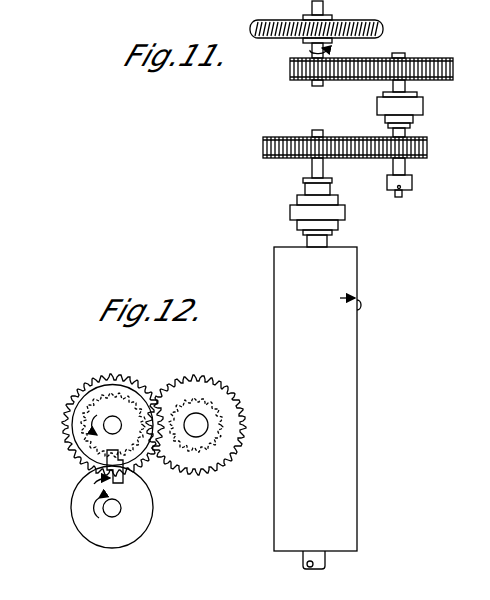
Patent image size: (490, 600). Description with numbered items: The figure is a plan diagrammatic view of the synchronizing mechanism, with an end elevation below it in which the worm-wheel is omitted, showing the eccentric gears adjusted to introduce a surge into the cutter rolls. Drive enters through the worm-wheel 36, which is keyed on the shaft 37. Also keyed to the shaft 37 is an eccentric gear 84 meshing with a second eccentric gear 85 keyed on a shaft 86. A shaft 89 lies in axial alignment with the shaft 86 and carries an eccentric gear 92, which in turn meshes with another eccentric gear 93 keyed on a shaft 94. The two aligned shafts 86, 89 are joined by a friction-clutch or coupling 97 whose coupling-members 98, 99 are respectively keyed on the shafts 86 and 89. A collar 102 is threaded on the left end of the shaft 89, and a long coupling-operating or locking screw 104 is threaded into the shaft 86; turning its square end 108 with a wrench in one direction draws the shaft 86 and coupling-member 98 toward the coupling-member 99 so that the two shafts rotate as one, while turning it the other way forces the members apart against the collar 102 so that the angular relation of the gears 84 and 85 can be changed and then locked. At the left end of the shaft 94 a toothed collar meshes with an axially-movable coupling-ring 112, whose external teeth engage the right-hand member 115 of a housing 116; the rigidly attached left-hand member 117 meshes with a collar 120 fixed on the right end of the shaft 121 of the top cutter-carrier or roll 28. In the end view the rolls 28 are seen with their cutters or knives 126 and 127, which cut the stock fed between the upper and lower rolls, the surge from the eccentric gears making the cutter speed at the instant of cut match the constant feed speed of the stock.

In FIG. 11, the cutter-carrier or roll 28 is at (358, 383).
In FIG. 12, the cutter-carrier or roll 28 is at (74, 411).
In FIG. 11, the worm-wheel 36 is at (385, 30).
In FIG. 11, the shaft 37 is at (324, 5).
In FIG. 11, the eccentric gear 84 is at (290, 72).
In FIG. 12, the eccentric gear 84 is at (92, 403).
In FIG. 11, the eccentric gear 85 is at (453, 68).
In FIG. 12, the eccentric gear 85 is at (236, 396).
In FIG. 11, the shaft 86 is at (406, 88).
In FIG. 11, the shaft 89 is at (406, 133).
In FIG. 11, the eccentric gear 92 is at (428, 152).
In FIG. 12, the eccentric gear 92 is at (172, 466).
In FIG. 11, the eccentric gear 93 is at (262, 147).
In FIG. 12, the eccentric gear 93 is at (62, 433).
In FIG. 11, the shaft 94 is at (316, 129).
In FIG. 11, the friction-clutch or coupling 97 is at (424, 110).
In FIG. 11, the coupling-member 98 is at (382, 95).
In FIG. 11, the coupling-member 99 is at (376, 108).
In FIG. 11, the collar 102 is at (413, 185).
In FIG. 12, the collar 102 is at (196, 413).
In FIG. 11, the coupling-operating or locking screw 104 is at (393, 192).
In FIG. 11, the square end 108 is at (398, 198).
In FIG. 11, the coupling-ring 112 is at (311, 172).
In FIG. 11, the right-hand member of housing 115 is at (304, 190).
In FIG. 11, the housing 116 is at (346, 212).
In FIG. 11, the left-hand member of housing 117 is at (297, 218).
In FIG. 11, the collar 120 is at (303, 233).
In FIG. 11, the shaft 121 is at (330, 239).
In FIG. 12, the cutter or knife 126 is at (106, 466).
In FIG. 12, the cutter or knife 127 is at (94, 492).